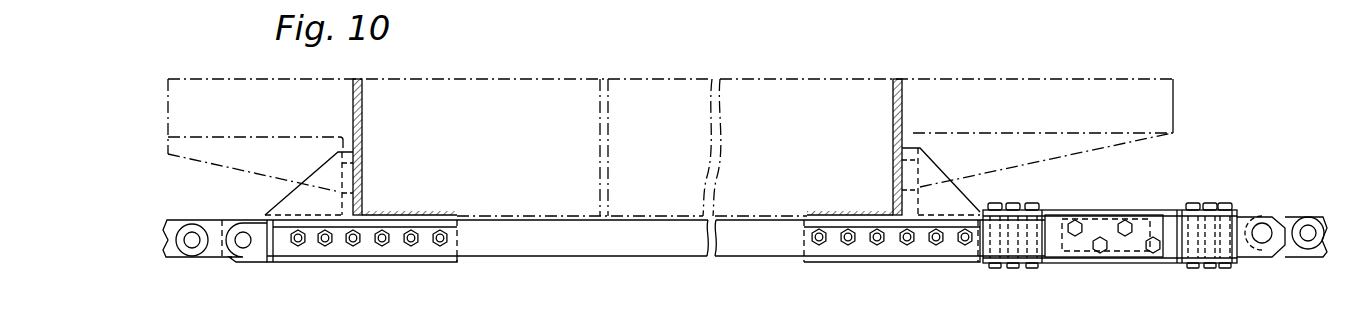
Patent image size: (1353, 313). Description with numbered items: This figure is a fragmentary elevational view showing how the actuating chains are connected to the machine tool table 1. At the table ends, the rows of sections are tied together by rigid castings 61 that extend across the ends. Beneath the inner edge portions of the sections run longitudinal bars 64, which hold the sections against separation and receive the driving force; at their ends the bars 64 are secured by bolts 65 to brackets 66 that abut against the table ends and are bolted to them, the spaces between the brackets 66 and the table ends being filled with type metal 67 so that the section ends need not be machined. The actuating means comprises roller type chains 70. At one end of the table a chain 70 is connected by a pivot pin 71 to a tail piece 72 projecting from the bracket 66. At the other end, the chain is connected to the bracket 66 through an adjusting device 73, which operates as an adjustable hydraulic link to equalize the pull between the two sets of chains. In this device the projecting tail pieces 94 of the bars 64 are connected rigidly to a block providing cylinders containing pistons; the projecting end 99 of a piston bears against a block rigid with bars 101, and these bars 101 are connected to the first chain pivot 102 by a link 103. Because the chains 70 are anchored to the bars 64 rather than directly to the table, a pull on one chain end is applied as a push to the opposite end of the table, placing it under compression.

The trailer frame assembly 1 is at (785, 77).
The rigid casting 61 is at (258, 79).
The bar 64 is at (545, 229).
The bolt 65 is at (352, 245).
The bracket 66 is at (302, 197).
The type metal 67 is at (358, 188).
The roller type chain 70 is at (203, 258).
The pivot pin 71 is at (242, 232).
The tail piece 72 is at (264, 259).
The adjusting device 73 is at (1153, 194).
The tail piece 94 is at (1123, 258).
The projecting end 99 is at (1057, 264).
The bar 101 is at (1117, 210).
The first chain pivot 102 is at (1264, 231).
The link 103 is at (1248, 218).